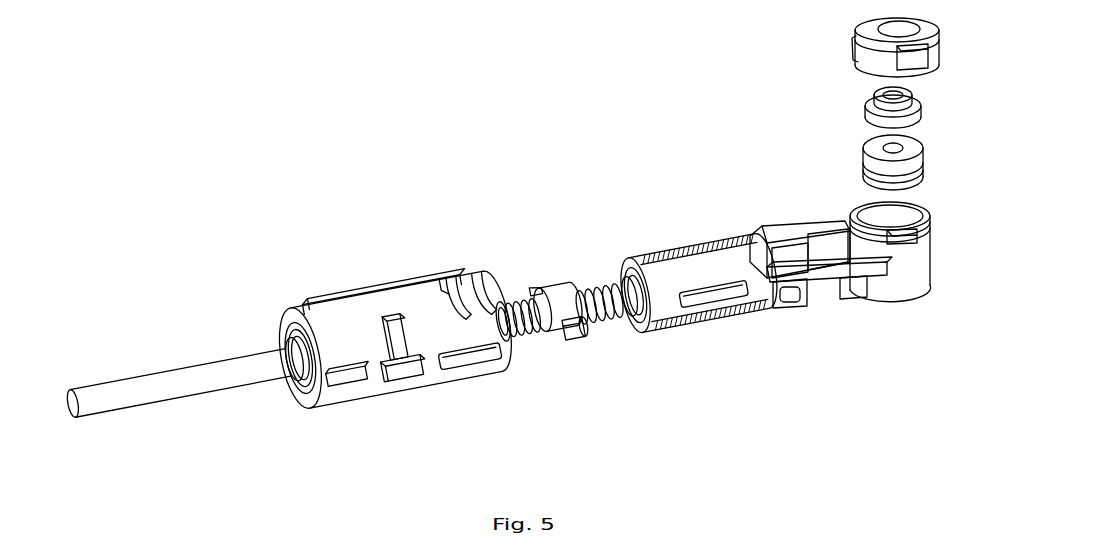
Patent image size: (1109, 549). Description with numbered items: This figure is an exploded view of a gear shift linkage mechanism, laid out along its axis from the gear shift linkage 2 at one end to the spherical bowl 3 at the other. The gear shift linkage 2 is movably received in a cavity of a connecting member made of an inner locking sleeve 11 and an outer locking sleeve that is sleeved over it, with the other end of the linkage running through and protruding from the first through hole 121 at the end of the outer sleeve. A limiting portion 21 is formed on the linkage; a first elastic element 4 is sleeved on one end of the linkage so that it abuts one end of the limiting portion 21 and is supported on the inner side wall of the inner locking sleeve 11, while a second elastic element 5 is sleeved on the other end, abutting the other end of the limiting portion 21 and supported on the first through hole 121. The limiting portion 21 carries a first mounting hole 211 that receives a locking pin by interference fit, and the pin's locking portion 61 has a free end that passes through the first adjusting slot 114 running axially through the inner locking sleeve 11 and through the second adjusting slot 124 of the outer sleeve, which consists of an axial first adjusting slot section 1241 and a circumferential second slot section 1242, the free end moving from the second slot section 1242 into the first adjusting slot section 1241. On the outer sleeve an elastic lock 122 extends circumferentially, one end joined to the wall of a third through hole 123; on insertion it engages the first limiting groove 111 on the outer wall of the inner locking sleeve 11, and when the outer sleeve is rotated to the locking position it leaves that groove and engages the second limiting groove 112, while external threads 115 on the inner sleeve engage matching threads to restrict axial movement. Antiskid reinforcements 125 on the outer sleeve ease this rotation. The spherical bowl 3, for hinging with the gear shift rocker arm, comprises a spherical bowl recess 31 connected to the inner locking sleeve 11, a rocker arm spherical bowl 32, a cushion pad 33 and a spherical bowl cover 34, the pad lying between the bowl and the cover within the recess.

The gear shift linkage 2 is at (232, 378).
The first through hole 121 is at (287, 352).
The elastic lock 122 is at (452, 292).
The third through hole 123 is at (474, 290).
The second adjusting slot 124 is at (433, 377).
The first adjusting slot section 1241 is at (407, 387).
The second slot section 1242 is at (410, 347).
The antiskid reinforcements 125 is at (462, 362).
The second elastic element 5 is at (516, 336).
The locking portion 61 is at (532, 288).
The limiting portion 21 is at (560, 294).
The first mounting hole 211 is at (568, 340).
The first elastic element 4 is at (630, 322).
The inner locking sleeve 11 is at (695, 262).
The external threads 115 is at (690, 318).
The second limiting groove 112 is at (766, 236).
The first limiting groove 111 is at (812, 300).
The first adjusting slot 114 is at (780, 310).
The spherical bowl 3 is at (900, 287).
The spherical bowl recess 31 is at (928, 210).
The rocker arm spherical bowl 32 is at (921, 146).
The cushion pad 33 is at (922, 101).
The spherical bowl cover 34 is at (935, 54).